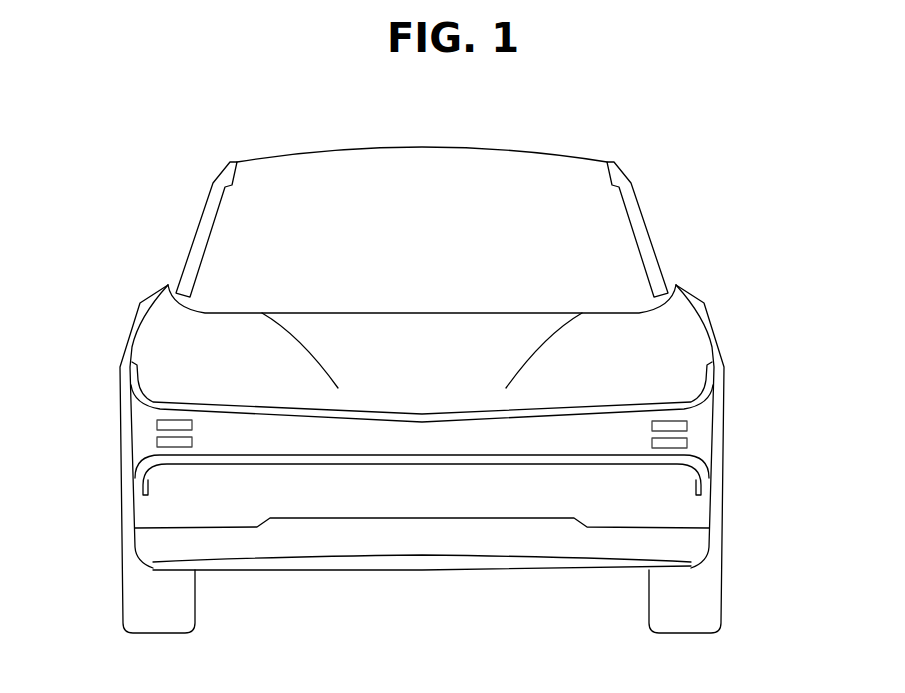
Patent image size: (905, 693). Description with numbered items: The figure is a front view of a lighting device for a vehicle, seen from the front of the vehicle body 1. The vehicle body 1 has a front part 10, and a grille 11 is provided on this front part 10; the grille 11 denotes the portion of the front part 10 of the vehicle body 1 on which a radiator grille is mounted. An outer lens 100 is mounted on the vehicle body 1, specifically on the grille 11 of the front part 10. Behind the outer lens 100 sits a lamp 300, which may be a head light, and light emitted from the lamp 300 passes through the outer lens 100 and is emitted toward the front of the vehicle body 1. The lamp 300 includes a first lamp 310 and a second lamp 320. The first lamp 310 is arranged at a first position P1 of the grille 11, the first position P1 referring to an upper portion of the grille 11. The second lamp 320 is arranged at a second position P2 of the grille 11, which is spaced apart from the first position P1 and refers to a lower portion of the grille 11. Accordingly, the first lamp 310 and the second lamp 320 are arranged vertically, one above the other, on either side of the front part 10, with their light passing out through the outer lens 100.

The vehicle body 1 is at (713, 328).
The front part 10 is at (417, 487).
The grille 11 is at (302, 463).
The outer lens 100 is at (503, 437).
The lamp 300 is at (514, 424).
The first lamp 310 is at (687, 426).
The second lamp 320 is at (687, 443).
The first position P1 is at (100, 418).
The second position P2 is at (100, 449).